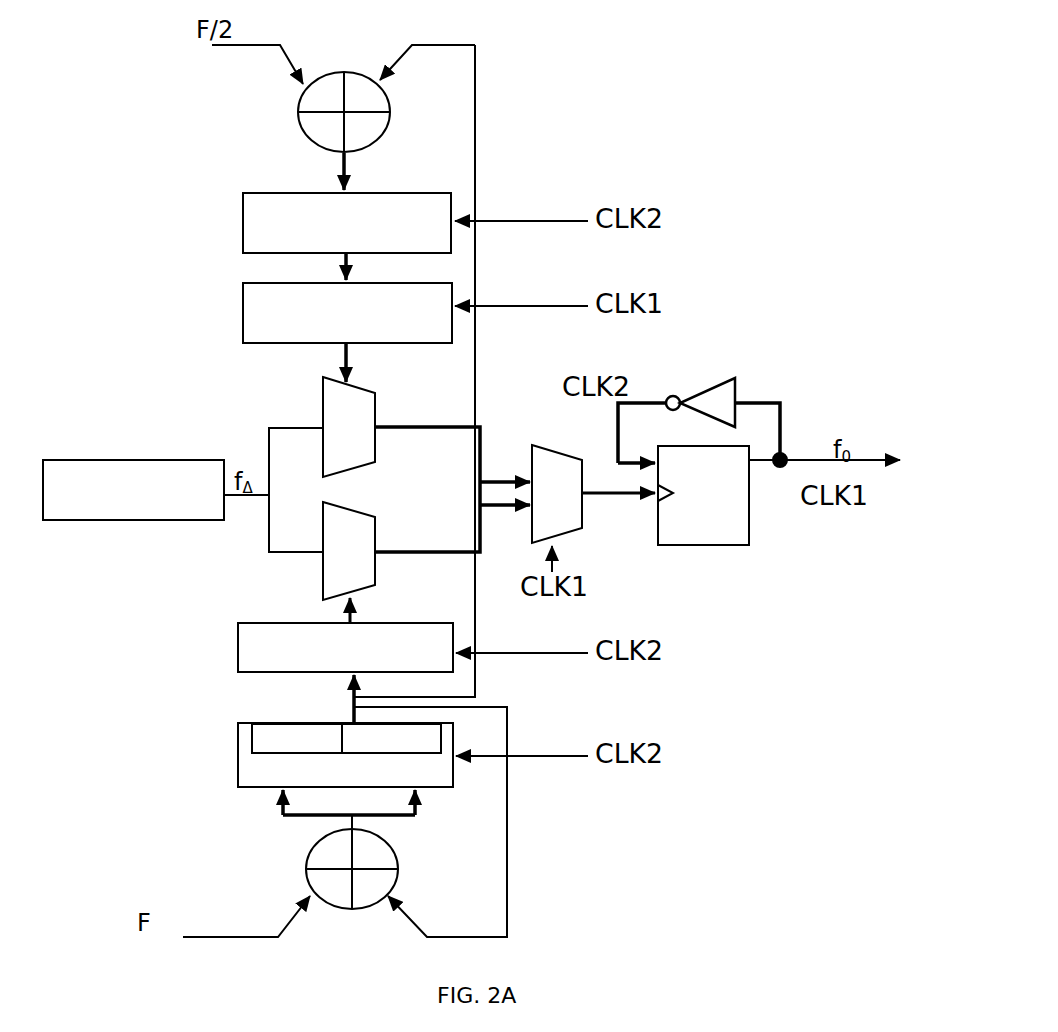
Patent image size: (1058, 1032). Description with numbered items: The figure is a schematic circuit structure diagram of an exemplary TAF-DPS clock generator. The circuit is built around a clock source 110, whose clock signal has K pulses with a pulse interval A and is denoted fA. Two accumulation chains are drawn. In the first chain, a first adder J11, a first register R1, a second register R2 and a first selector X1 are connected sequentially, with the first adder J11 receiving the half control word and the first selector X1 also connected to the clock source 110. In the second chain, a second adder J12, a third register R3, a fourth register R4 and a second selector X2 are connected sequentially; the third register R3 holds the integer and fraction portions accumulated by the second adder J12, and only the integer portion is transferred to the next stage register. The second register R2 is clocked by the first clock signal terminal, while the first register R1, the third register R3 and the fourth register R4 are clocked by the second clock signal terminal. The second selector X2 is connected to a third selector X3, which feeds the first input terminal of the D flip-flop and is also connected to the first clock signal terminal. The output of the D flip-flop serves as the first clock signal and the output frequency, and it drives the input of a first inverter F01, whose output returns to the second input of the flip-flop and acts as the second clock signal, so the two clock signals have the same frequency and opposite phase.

The clock source 110 is at (133, 490).
The first adder J11 is at (388, 133).
The second adder J12 is at (396, 855).
The first register R1 is at (347, 223).
The second register R2 is at (347, 313).
The third register R3 is at (345, 755).
The fourth register R4 is at (345, 647).
The first selector X1 is at (375, 415).
The second selector X2 is at (375, 560).
The third selector X3 is at (548, 445).
The first inverter F01 is at (702, 455).